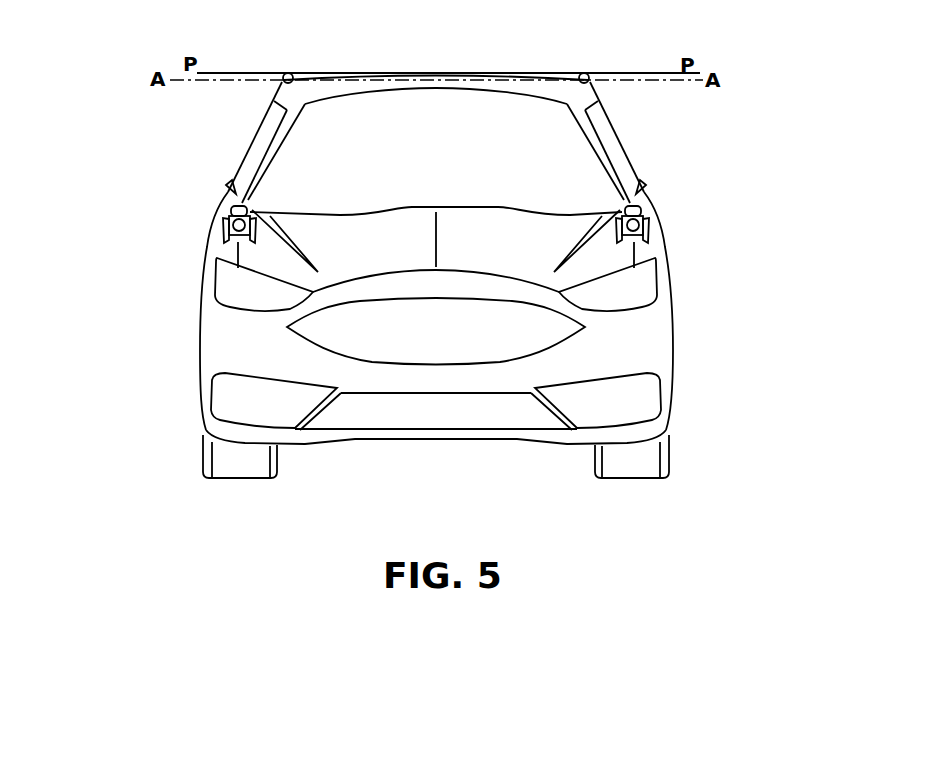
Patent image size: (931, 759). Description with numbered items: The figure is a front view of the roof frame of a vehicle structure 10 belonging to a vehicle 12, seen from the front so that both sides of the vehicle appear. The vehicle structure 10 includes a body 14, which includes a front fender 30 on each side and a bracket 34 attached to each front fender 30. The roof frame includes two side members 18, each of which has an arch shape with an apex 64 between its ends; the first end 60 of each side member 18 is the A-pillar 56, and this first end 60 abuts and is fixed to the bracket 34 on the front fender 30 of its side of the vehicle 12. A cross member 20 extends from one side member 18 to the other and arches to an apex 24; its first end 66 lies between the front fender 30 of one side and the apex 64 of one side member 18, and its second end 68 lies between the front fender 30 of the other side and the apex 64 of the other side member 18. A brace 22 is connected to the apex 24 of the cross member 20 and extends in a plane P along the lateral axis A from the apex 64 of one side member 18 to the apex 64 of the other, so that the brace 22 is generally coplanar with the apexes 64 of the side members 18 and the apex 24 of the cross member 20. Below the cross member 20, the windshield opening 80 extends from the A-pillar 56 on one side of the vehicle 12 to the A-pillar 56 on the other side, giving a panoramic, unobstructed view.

The vehicle structure 10 is at (665, 192).
The vehicle 12 is at (746, 109).
The body 14 is at (675, 275).
The side member 18 is at (266, 115).
The cross member 20 is at (509, 91).
The brace 22 is at (542, 70).
The apex 24 is at (435, 91).
The front fender 30 is at (217, 248).
The bracket 34 is at (221, 226).
The A-pillar 56 is at (257, 192).
The first end 60 is at (226, 181).
The apex 64 is at (288, 73).
The first end 66 is at (573, 112).
The second end 68 is at (300, 112).
The windshield opening 80 is at (481, 148).